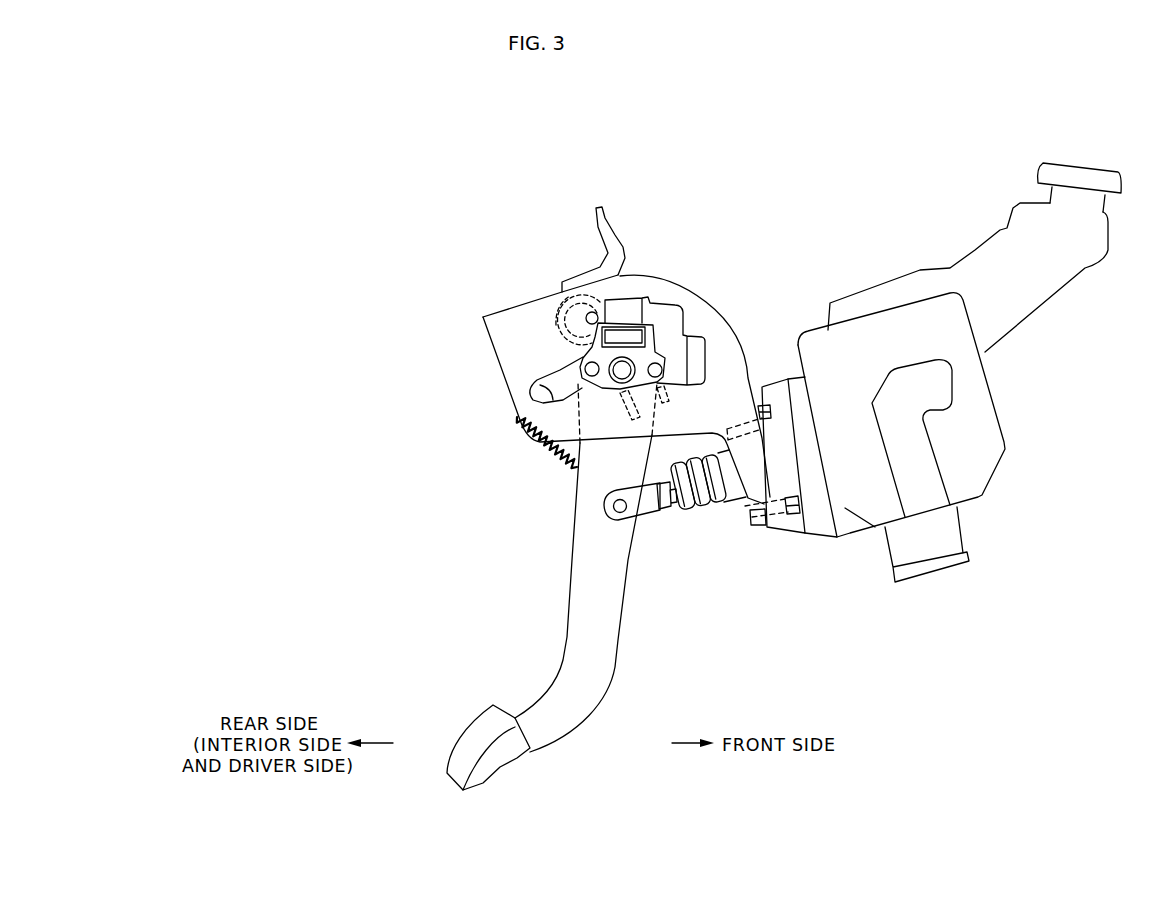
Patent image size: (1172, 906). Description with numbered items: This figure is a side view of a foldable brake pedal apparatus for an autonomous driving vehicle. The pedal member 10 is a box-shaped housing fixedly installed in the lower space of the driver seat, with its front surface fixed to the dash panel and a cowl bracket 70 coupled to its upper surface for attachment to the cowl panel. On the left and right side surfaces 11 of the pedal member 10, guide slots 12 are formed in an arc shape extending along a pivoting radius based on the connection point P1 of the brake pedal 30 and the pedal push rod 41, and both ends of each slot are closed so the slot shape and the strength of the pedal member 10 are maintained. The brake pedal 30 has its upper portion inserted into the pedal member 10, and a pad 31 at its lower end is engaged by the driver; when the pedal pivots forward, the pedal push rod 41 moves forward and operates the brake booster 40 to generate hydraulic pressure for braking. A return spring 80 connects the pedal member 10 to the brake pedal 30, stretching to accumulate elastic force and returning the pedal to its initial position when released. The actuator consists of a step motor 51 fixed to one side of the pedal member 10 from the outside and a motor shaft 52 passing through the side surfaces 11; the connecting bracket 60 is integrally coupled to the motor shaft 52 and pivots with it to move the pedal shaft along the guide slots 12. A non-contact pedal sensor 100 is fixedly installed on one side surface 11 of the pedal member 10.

The pedal member 10 is at (695, 279).
The side surface 11 is at (502, 340).
The guide slot 12 is at (533, 390).
The brake pedal 30 is at (582, 587).
The pad 31 is at (478, 727).
The brake booster 40 is at (987, 423).
The pedal push rod 41 is at (673, 500).
The step motor 51 is at (552, 323).
The motor shaft 52 is at (588, 312).
The connecting bracket 60 is at (575, 320).
The cowl bracket 70 is at (613, 240).
The return spring 80 is at (547, 458).
The non-contact pedal sensor 100 is at (638, 357).
The connection point P1 is at (606, 516).